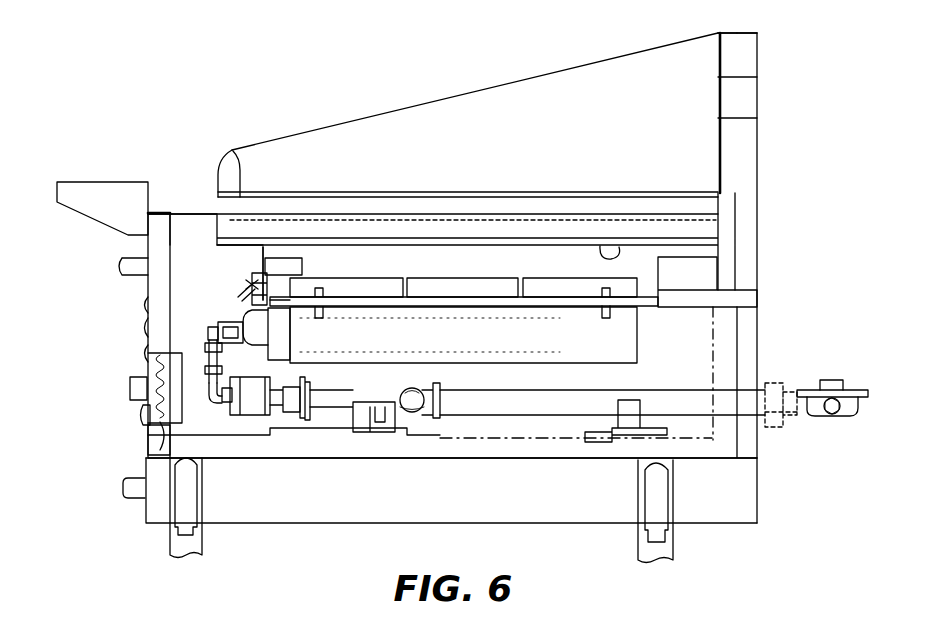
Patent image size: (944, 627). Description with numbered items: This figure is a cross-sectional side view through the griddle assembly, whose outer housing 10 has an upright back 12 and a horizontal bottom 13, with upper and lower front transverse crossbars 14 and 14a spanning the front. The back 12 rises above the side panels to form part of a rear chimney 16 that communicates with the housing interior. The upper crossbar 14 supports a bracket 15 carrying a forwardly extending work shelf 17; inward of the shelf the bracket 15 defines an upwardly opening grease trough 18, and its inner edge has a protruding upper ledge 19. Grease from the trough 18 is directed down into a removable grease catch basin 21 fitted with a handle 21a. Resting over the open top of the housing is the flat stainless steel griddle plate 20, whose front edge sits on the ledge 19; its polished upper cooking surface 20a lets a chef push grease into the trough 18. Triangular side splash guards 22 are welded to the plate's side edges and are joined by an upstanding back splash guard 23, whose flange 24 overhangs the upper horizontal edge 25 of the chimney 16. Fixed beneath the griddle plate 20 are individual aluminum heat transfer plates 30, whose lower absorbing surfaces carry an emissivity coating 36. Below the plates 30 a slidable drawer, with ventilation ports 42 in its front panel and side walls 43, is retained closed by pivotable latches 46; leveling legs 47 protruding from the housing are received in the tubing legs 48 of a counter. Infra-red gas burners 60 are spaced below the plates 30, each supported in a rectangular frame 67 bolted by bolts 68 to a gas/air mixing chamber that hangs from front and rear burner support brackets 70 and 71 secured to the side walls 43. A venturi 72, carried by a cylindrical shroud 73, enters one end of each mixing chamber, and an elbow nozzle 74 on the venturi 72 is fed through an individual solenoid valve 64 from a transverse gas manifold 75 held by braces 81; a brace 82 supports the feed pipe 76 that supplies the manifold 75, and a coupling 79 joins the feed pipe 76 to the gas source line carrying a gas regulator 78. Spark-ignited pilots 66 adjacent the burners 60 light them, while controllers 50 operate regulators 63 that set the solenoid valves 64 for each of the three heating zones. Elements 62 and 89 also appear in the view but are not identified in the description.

The outer housing 10 is at (764, 328).
The back 12 is at (758, 358).
The bottom 13 is at (247, 458).
The upper front transverse crossbar 14 is at (160, 231).
The lower front transverse crossbar 14a is at (155, 448).
The bracket 15 is at (197, 205).
The rear chimney 16 is at (742, 148).
The work shelf 17 is at (93, 192).
The grease trough 18 is at (181, 200).
The upper ledge 19 is at (238, 182).
The griddle plate 20 is at (519, 190).
The upper cooking surface 20a is at (416, 191).
The grease catch basin 21 is at (368, 510).
The handle 21a is at (123, 488).
The side splash guards 22 is at (508, 90).
The back splash guard 23 is at (717, 136).
The flange 24 is at (722, 31).
The upper horizontal edge 25 is at (745, 31).
The heat transfer plates 30 is at (617, 212).
The coating 36 is at (621, 250).
The ventilation ports 42 is at (145, 305).
The side walls 43 is at (173, 288).
The pivotable latches 46 is at (142, 412).
The leveling legs 47 is at (188, 503).
The tubing legs 48 is at (163, 533).
The controllers 50 is at (128, 387).
The infra-red gas burners 60 is at (344, 280).
The box 62 is at (288, 257).
The regulators 63 is at (301, 438).
The solenoid valves 64 is at (254, 404).
The igniting pilots 66 is at (262, 280).
The rectangular frame 67 is at (574, 307).
The bolts 68 is at (612, 314).
The front burner support bracket 70 is at (245, 253).
The rear burner support bracket 71 is at (659, 274).
The venturi 72 is at (483, 333).
The cylindrical shroud 73 is at (284, 332).
The elbow nozzle 74 is at (207, 343).
The gas manifold 75 is at (414, 386).
The feed pipe 76 is at (693, 410).
The gas regulator 78 is at (850, 390).
The coupling 79 is at (774, 428).
The braces 81 is at (376, 433).
The brace 82 is at (625, 400).
The axis 89 is at (560, 358).